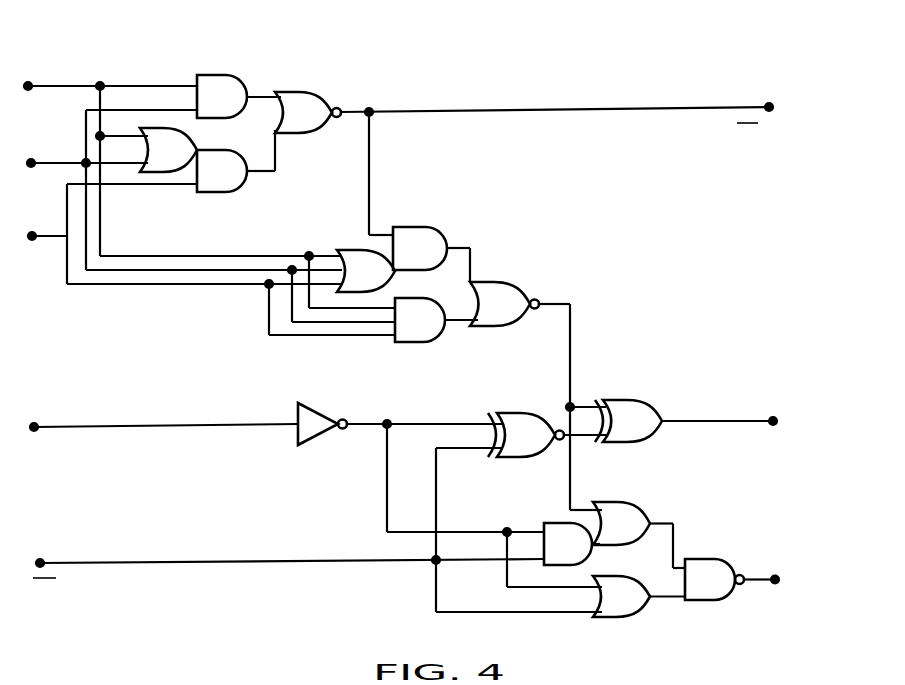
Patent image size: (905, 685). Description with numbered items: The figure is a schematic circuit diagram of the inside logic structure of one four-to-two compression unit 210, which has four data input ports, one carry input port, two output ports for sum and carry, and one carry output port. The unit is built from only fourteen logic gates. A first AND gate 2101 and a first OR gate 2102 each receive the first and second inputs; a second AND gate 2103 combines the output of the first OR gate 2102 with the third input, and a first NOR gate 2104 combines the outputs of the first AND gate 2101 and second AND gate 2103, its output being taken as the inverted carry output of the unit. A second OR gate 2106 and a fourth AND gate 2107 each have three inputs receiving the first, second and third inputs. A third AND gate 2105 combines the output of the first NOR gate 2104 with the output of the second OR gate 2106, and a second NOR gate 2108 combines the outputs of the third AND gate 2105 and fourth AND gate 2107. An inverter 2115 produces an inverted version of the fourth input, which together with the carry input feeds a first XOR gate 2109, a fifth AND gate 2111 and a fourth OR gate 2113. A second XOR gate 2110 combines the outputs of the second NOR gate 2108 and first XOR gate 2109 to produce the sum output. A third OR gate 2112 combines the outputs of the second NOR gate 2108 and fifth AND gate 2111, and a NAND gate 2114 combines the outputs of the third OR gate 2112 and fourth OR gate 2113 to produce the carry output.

The 4:2 compression unit 210 is at (816, 240).
The first AND gate 2101 is at (227, 73).
The first OR gate 2102 is at (157, 128).
The second AND gate 2103 is at (213, 193).
The first NOR gate 2104 is at (297, 135).
The third AND gate 2105 is at (412, 226).
The second OR gate 2106 is at (357, 249).
The fourth AND gate 2107 is at (413, 343).
The second NOR gate 2108 is at (500, 282).
The first XOR gate 2109 is at (513, 413).
The second XOR gate 2110 is at (630, 400).
The fifth AND gate 2111 is at (555, 523).
The third OR gate 2112 is at (620, 503).
The fourth OR gate 2113 is at (622, 618).
The NAND gate 2114 is at (705, 558).
The inverter 2115 is at (322, 437).